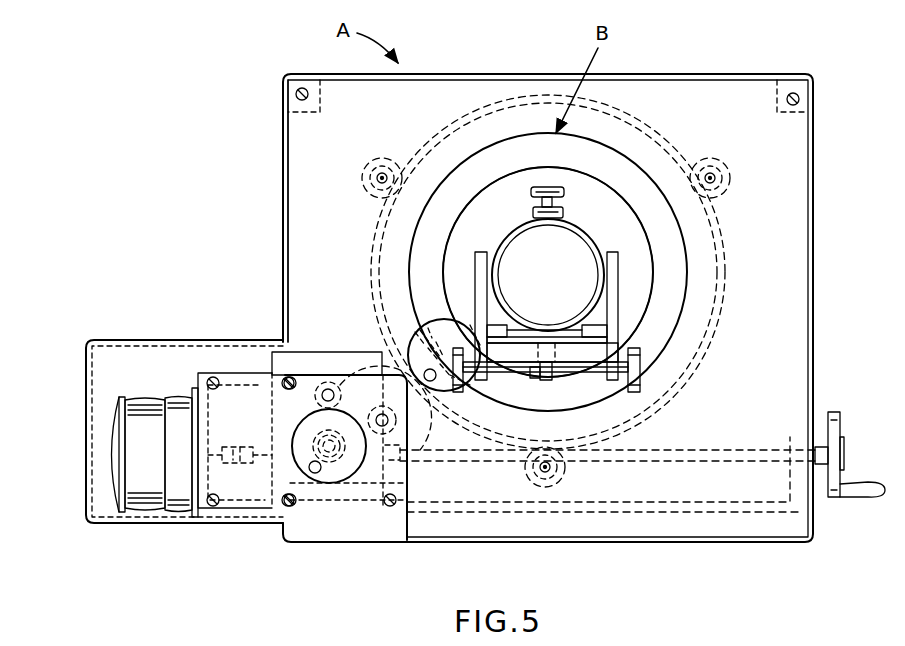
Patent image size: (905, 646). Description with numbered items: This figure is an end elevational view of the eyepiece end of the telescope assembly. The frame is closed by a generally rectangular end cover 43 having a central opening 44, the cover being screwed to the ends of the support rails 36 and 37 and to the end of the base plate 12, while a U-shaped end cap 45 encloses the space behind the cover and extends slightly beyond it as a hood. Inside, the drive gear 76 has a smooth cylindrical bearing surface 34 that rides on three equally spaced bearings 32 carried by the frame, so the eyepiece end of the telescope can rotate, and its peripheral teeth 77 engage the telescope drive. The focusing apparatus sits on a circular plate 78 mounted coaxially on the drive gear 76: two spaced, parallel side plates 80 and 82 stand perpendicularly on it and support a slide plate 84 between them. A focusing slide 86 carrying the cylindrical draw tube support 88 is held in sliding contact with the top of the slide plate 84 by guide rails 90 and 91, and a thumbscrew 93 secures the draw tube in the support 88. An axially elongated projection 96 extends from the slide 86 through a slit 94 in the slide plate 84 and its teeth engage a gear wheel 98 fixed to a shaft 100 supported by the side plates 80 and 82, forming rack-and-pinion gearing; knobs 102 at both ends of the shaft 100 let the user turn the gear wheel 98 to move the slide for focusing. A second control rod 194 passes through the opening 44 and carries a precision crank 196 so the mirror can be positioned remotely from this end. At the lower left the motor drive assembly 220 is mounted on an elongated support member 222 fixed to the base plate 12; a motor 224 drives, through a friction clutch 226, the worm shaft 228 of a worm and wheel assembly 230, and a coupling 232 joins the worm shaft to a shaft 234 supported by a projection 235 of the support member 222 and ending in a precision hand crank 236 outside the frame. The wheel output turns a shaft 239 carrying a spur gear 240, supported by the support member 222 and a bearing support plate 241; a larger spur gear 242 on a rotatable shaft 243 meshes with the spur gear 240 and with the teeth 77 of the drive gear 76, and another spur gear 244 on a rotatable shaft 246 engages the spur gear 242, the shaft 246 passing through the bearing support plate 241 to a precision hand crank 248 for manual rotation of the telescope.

The base plate 12 is at (607, 538).
The bearings 32 is at (368, 162).
The cylindrical bearing surface 34 is at (722, 238).
The support rail 36 is at (300, 116).
The support rail 37 is at (800, 122).
The end cover 43 is at (312, 211).
The central opening 44 is at (457, 165).
The U-shaped end cap 45 is at (535, 74).
The drive gear 76 is at (612, 168).
The peripheral teeth 77 is at (640, 432).
The circular plate 78 is at (548, 272).
The side plate 80 is at (480, 258).
The side plate 82 is at (612, 262).
The slide plate 84 is at (598, 357).
The focusing slide 86 is at (592, 332).
The draw tube support 88 is at (590, 244).
The guide rail 90 is at (492, 330).
The guide rail 91 is at (598, 343).
The thumbscrew 93 is at (543, 193).
The slit 94 is at (568, 338).
The axially elongated projection 96 is at (532, 378).
The gear wheel 98 is at (547, 380).
The shaft 100 is at (592, 372).
The knobs 102 is at (460, 392).
The second control rod 194 is at (442, 335).
The precision crank 196 is at (428, 340).
The motor drive assembly 220 is at (80, 436).
The support member 222 is at (690, 512).
The motor 224 is at (150, 500).
The friction clutch 226 is at (238, 445).
The worm shaft 228 is at (268, 450).
The worm and wheel assembly 230 is at (327, 363).
The coupling 232 is at (455, 470).
The shaft 234 is at (700, 460).
The projection 235 is at (792, 437).
The precision hand crank 236 is at (840, 498).
The shaft 239 is at (332, 388).
The spur gear 240 is at (325, 383).
The bearing support plate 241 is at (236, 508).
The spur gear 242 is at (402, 466).
The rotatable shaft 243 is at (390, 422).
The spur gear 244 is at (333, 462).
The rotatable shaft 246 is at (326, 462).
The precision hand crank 248 is at (334, 440).